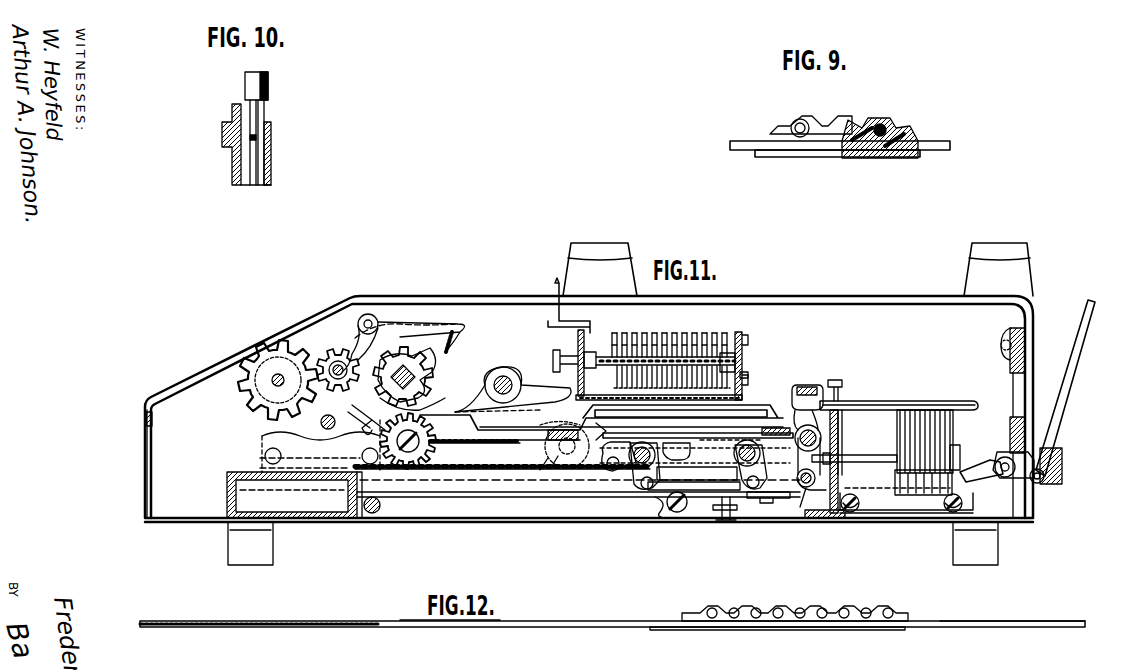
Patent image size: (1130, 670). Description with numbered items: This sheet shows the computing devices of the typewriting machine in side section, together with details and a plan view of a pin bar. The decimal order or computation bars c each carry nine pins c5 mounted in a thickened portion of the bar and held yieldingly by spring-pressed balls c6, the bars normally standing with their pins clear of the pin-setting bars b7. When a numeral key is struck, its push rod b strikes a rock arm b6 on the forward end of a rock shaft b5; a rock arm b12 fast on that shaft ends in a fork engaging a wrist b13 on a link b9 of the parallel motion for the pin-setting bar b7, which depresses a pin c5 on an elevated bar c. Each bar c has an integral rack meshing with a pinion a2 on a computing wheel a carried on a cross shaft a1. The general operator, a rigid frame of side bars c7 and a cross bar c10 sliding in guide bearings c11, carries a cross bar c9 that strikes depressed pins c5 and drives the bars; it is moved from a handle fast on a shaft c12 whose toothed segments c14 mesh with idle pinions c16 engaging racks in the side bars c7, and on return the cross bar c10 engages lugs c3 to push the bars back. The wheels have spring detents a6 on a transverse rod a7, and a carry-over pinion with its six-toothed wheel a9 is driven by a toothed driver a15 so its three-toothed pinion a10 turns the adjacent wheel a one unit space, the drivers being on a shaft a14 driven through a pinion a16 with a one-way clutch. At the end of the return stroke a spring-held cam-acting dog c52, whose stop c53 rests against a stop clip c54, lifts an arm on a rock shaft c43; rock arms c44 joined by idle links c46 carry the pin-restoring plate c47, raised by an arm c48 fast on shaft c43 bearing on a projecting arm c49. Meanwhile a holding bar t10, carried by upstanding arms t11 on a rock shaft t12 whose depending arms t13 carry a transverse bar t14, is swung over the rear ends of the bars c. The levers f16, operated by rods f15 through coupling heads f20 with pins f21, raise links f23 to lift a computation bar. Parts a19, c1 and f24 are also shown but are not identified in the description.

In FIG. 11, the computing wheel a is at (242, 383).
In FIG. 11, the cross shaft a1 is at (272, 384).
In FIG. 11, the pinion a2 is at (263, 350).
In FIG. 11, the spring detent a6 is at (313, 335).
In FIG. 11, the transverse rod a7 is at (373, 314).
In FIG. 11, the six-toothed wheel a9 is at (330, 362).
In FIG. 11, the three-toothed pinion a10 is at (403, 370).
In FIG. 11, the carry-over drive shaft a14 is at (420, 386).
In FIG. 11, the toothed driver a15 is at (362, 428).
In FIG. 11, the pinion a16 is at (426, 392).
In FIG. 11, the rack gear a19 is at (502, 441).
In FIG. 11, the push rod b is at (548, 321).
In FIG. 11, the linkage-operating rock shaft b5 is at (586, 368).
In FIG. 11, the rock arm b6 is at (556, 360).
In FIG. 11, the pin-setting bar b7 is at (741, 366).
In FIG. 11, the link b9 is at (676, 345).
In FIG. 11, the rock arm b12 is at (618, 343).
In FIG. 11, the wrist b13 is at (648, 343).
In FIG. 10, the decimal order bar c is at (230, 170).
In FIG. 9, the decimal order bar c is at (748, 148).
In FIG. 12, the decimal order bar c is at (555, 628).
In FIG. 11, the decimal order bar c is at (601, 422).
In FIG. 11, the screw c1 is at (844, 384).
In FIG. 11, the lug c3 is at (694, 437).
In FIG. 10, the pin c5 is at (270, 80).
In FIG. 9, the pin c5 is at (840, 120).
In FIG. 12, the pin c5 is at (778, 608).
In FIG. 11, the pin c5 is at (742, 398).
In FIG. 9, the spring-pressed ball c6 is at (866, 158).
In FIG. 11, the side bar c7 is at (580, 482).
In FIG. 11, the cross bar c9 is at (773, 428).
In FIG. 11, the cross bar c10 is at (557, 445).
In FIG. 11, the guide bearing c11 is at (872, 510).
In FIG. 11, the shaft c12 is at (520, 388).
In FIG. 11, the toothed segment c14 is at (475, 441).
In FIG. 11, the idle pinion c16 is at (549, 474).
In FIG. 11, the rock shaft c43 is at (760, 456).
In FIG. 11, the rock arm c44 is at (752, 470).
In FIG. 11, the idle link c46 is at (690, 510).
In FIG. 11, the pin-restoring plate c47 is at (608, 470).
In FIG. 11, the arm c48 is at (684, 443).
In FIG. 11, the projecting arm c49 is at (745, 432).
In FIG. 11, the cam-acting dog c52 is at (667, 502).
In FIG. 11, the stop c53 is at (724, 521).
In FIG. 11, the stop clip c54 is at (756, 504).
In FIG. 11, the holding bar t10 is at (806, 384).
In FIG. 11, the upstanding arm t11 is at (812, 400).
In FIG. 11, the rock shaft t12 is at (822, 433).
In FIG. 11, the depending arm t13 is at (835, 460).
In FIG. 11, the transverse bar t14 is at (813, 493).
In FIG. 11, the rod f15 is at (1058, 406).
In FIG. 11, the lever f16 is at (978, 466).
In FIG. 11, the coupling head f20 is at (1058, 452).
In FIG. 11, the pin f21 is at (1042, 482).
In FIG. 11, the link f23 is at (944, 448).
In FIG. 11, the spring seat f24 is at (900, 481).